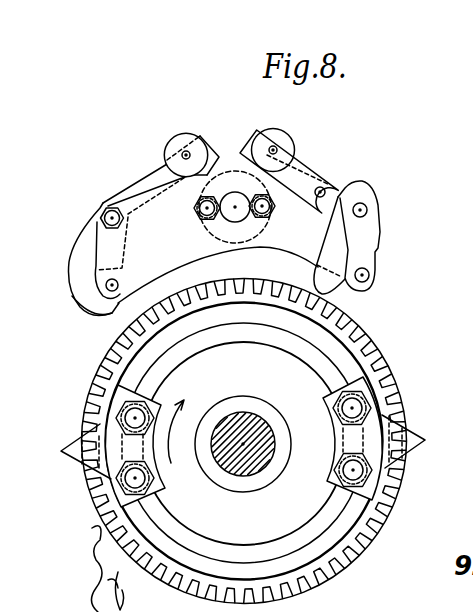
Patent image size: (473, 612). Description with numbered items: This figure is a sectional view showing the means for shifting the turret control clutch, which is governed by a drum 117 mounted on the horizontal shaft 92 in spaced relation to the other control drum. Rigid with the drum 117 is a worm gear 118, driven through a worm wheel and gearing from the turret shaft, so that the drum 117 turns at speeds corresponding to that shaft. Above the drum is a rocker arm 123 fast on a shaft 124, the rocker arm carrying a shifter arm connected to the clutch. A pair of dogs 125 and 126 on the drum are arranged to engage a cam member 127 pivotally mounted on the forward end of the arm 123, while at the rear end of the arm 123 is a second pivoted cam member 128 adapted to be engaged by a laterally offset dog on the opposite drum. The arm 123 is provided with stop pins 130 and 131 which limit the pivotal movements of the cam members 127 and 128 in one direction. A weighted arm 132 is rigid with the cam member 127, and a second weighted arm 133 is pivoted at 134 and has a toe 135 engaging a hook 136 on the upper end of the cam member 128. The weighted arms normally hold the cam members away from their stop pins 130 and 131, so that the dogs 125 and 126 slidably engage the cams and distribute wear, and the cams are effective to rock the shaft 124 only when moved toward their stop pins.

The shaft 92 is at (262, 427).
The drum 117 is at (244, 443).
The worm gear 118 is at (357, 552).
The rocker arm 123 is at (193, 225).
The shaft 124 is at (235, 194).
The dog 125 is at (74, 437).
The dog 126 is at (414, 437).
The cam member 127 is at (94, 305).
The cam member 128 is at (364, 232).
The stop pin 130 is at (119, 286).
The stop pin 131 is at (372, 273).
The weighted arm 132 is at (152, 178).
The weighted arm 133 is at (298, 163).
The pivot 134 is at (323, 188).
The toe 135 is at (325, 209).
The hook 136 is at (366, 188).